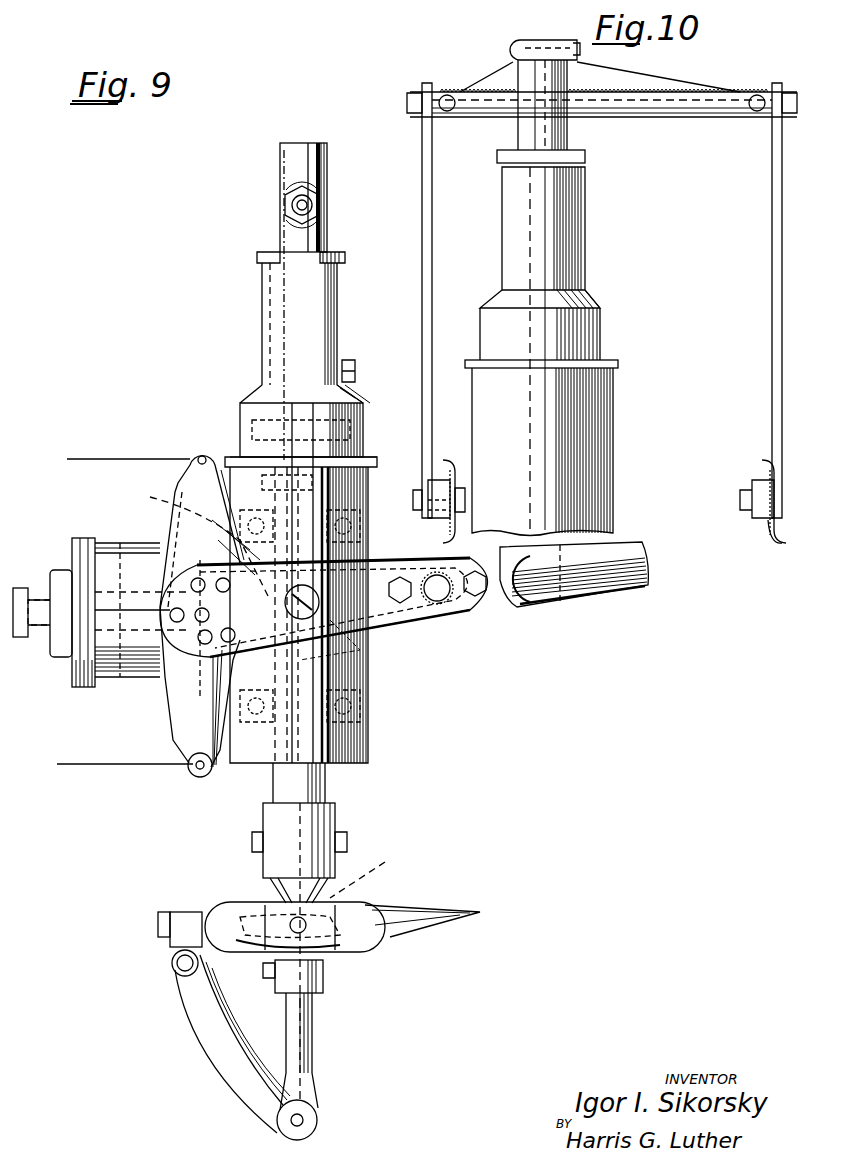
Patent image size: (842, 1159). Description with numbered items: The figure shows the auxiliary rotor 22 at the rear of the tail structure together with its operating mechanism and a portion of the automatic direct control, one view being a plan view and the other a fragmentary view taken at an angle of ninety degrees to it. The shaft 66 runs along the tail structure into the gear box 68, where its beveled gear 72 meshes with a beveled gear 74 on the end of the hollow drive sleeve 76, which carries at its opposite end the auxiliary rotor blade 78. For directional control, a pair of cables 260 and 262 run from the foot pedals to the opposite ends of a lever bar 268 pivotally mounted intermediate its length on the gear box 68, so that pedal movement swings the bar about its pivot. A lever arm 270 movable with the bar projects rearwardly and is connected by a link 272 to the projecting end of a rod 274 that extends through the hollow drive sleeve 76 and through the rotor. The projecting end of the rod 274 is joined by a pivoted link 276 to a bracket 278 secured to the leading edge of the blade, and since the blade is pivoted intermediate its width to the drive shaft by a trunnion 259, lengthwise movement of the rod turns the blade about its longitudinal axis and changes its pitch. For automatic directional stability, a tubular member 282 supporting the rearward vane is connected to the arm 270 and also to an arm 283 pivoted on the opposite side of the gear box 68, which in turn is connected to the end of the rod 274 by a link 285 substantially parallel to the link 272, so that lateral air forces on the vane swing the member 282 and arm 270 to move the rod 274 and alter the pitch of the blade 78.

In FIG. 9, the auxiliary rotor 22 is at (258, 900).
In FIG. 9, the shaft 66 is at (40, 590).
In FIG. 9, the gear box 68 is at (376, 430).
In FIG. 10, the gear box 68 is at (594, 251).
In FIG. 9, the beveled gear 72 is at (197, 544).
In FIG. 9, the beveled gear 74 is at (370, 650).
In FIG. 9, the hollow drive sleeve 76 is at (330, 782).
In FIG. 9, the auxiliary rotor blade 78 is at (350, 945).
In FIG. 9, the trunnion 259 is at (330, 893).
In FIG. 9, the cable 260 is at (130, 458).
In FIG. 9, the cable 262 is at (113, 767).
In FIG. 9, the lever bar 268 is at (178, 710).
In FIG. 9, the lever arm 270 is at (400, 625).
In FIG. 9, the link 272 is at (285, 333).
In FIG. 10, the link 272 is at (424, 228).
In FIG. 9, the rod 274 is at (310, 146).
In FIG. 10, the rod 274 is at (522, 135).
In FIG. 9, the pivoted link 276 is at (215, 1058).
In FIG. 9, the bracket 278 is at (212, 907).
In FIG. 9, the tubular member 282 is at (625, 595).
In FIG. 10, the arm 283 is at (765, 535).
In FIG. 10, the link 285 is at (772, 300).